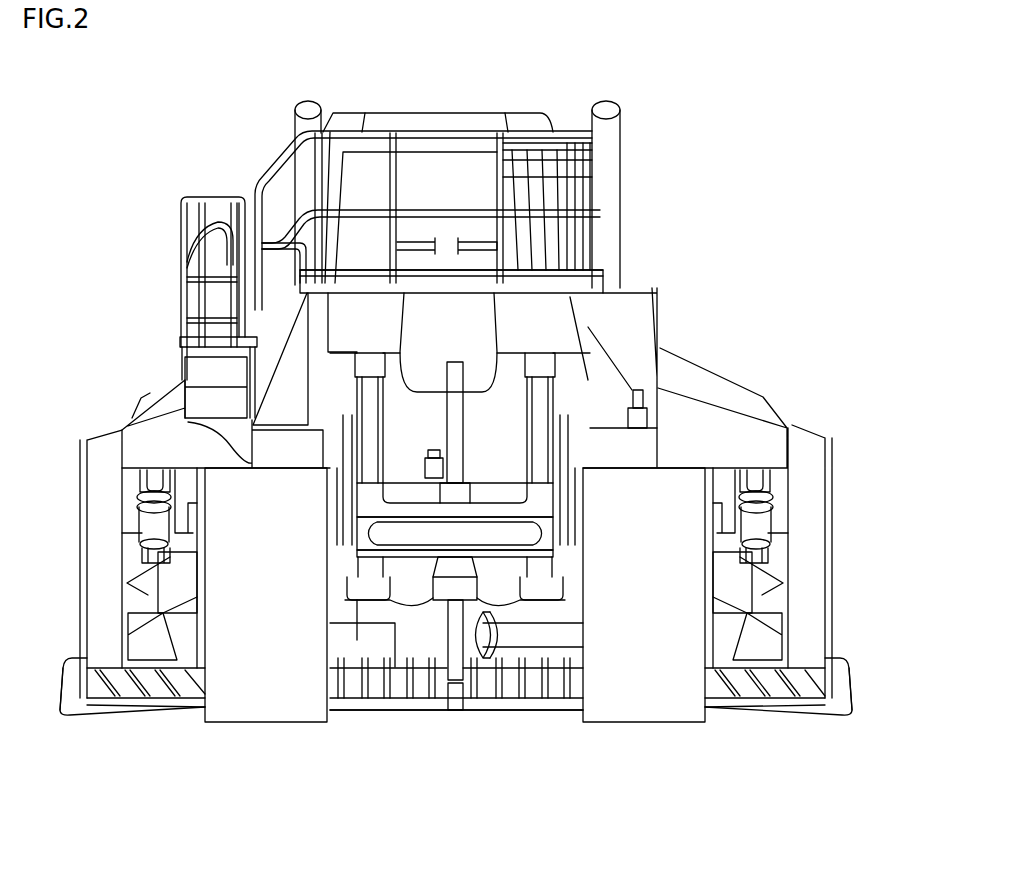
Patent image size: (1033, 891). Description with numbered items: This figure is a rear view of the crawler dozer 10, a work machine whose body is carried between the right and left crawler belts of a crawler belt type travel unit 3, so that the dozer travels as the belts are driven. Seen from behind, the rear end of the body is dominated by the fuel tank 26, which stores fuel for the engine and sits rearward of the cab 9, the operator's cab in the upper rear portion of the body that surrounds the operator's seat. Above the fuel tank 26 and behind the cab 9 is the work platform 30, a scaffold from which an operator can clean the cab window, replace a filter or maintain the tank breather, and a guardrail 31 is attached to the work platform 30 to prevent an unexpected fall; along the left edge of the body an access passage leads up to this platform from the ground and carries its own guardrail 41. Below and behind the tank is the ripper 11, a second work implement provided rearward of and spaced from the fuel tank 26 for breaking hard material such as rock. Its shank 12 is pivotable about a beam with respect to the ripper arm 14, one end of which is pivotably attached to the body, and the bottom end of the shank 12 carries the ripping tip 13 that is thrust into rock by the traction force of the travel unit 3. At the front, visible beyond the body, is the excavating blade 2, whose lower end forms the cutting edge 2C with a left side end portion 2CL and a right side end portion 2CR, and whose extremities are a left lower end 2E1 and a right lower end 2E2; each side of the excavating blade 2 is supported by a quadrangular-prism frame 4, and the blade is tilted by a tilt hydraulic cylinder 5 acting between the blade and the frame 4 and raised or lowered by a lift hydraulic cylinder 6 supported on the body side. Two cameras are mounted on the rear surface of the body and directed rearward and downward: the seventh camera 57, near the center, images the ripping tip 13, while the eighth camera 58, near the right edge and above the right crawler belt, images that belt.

The crawler dozer 10 is at (693, 102).
The excavating blade 2 is at (162, 445).
The cutting edge 2C is at (430, 712).
The left side end portion 2CL is at (165, 712).
The right side end portion 2CR is at (745, 712).
The left lower end 2E1 is at (62, 712).
The right lower end 2E2 is at (851, 712).
The travel unit 3 is at (262, 700).
The frame 4 is at (150, 598).
The tilt hydraulic cylinder 5 is at (152, 522).
The lift hydraulic cylinder 6 is at (296, 130).
The cab 9 is at (440, 170).
The ripper 11 is at (436, 645).
The shank 12 is at (458, 642).
The ripping tip 13 is at (456, 698).
The ripper arm 14 is at (503, 585).
The fuel tank 26 is at (555, 318).
The work platform 30 is at (553, 280).
The guardrail 31 is at (476, 133).
The guardrail 41 is at (183, 230).
The seventh camera 57 is at (425, 472).
The eighth camera 58 is at (645, 400).